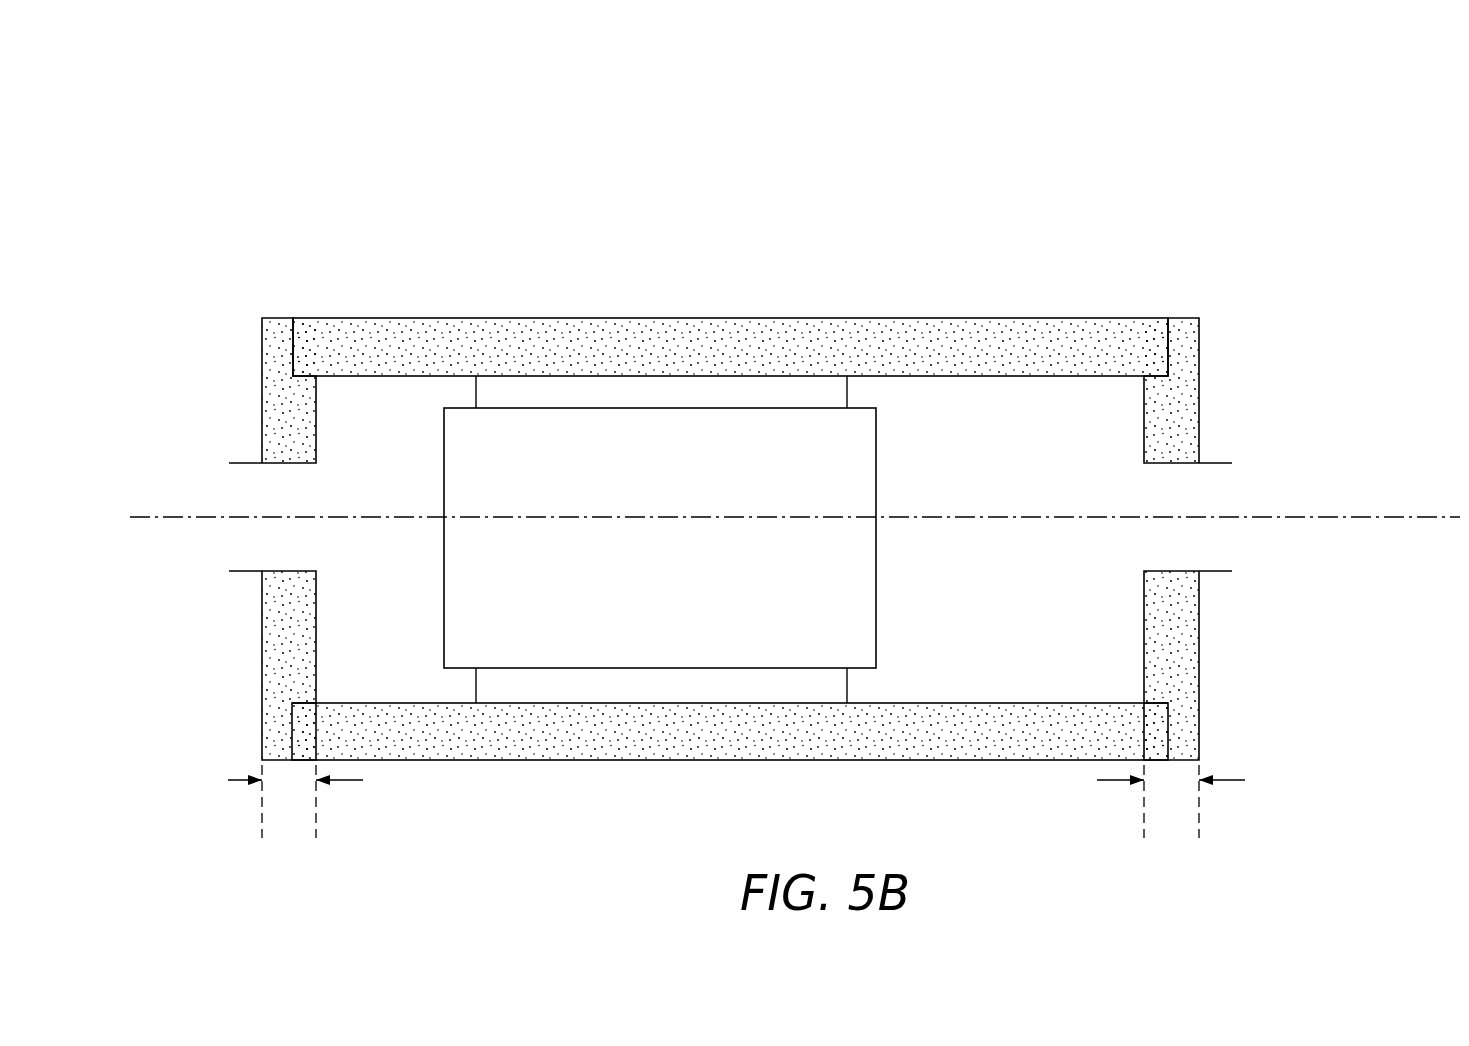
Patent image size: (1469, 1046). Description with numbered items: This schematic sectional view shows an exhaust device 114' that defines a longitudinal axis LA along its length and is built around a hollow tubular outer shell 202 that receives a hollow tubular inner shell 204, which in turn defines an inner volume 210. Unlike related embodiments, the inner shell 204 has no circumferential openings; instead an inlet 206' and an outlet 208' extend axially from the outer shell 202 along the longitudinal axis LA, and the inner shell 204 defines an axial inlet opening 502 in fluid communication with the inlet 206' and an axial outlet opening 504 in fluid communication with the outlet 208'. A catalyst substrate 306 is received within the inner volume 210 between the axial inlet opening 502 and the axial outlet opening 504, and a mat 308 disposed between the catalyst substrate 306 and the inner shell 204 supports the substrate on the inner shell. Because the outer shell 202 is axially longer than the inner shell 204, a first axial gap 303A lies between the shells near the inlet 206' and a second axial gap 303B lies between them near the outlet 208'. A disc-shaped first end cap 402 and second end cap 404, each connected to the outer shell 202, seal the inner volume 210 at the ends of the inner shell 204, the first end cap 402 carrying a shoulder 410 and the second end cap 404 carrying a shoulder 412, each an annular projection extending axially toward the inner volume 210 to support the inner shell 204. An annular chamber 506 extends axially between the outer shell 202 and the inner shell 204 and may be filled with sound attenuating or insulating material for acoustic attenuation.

The exhaust device 114' is at (1175, 46).
The annular chamber 506 is at (435, 352).
The inlet 206' is at (223, 391).
The outlet 208' is at (1270, 390).
The axial outlet opening 504 is at (1168, 496).
The axial inlet opening 502 is at (268, 545).
The longitudinal axis LA is at (796, 503).
The shoulder 410 is at (297, 704).
The shoulder 412 is at (1157, 705).
The first axial gap 303A is at (230, 780).
The second axial gap 303B is at (1233, 780).
The first end cap 402 is at (316, 692).
The second end cap 404 is at (1144, 683).
The inner volume 210 is at (450, 682).
The outer shell 202 is at (530, 760).
The inner shell 204 is at (628, 703).
The catalyst substrate 306 is at (710, 623).
The mat 308 is at (795, 682).